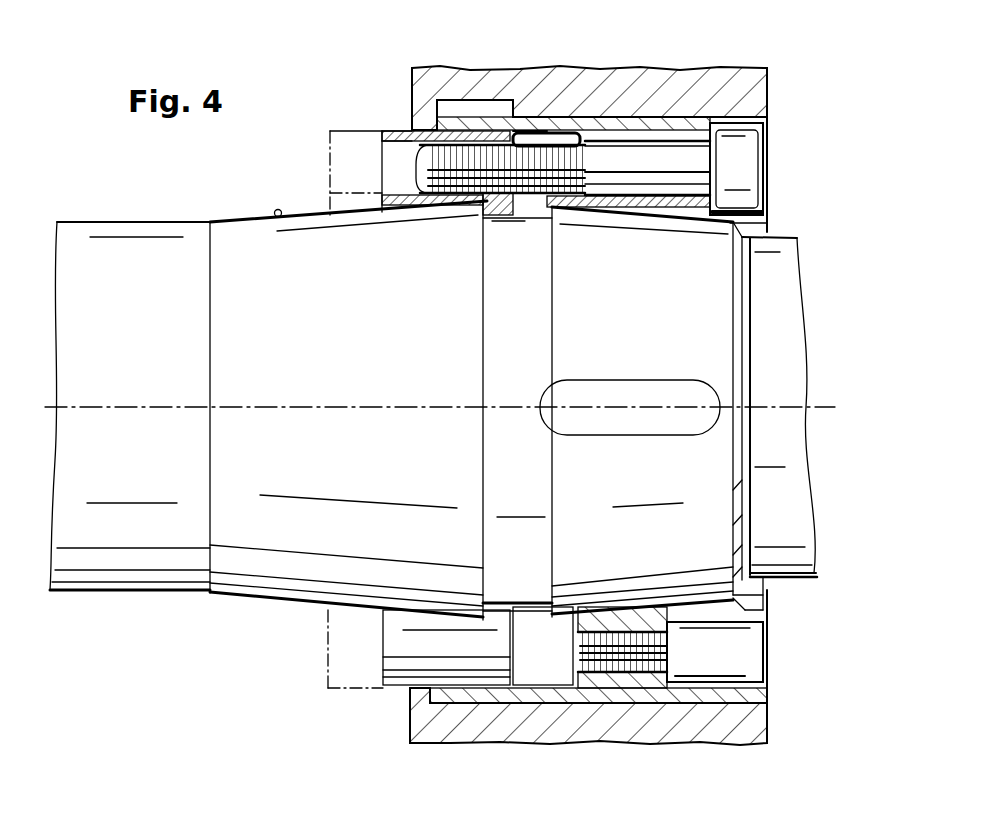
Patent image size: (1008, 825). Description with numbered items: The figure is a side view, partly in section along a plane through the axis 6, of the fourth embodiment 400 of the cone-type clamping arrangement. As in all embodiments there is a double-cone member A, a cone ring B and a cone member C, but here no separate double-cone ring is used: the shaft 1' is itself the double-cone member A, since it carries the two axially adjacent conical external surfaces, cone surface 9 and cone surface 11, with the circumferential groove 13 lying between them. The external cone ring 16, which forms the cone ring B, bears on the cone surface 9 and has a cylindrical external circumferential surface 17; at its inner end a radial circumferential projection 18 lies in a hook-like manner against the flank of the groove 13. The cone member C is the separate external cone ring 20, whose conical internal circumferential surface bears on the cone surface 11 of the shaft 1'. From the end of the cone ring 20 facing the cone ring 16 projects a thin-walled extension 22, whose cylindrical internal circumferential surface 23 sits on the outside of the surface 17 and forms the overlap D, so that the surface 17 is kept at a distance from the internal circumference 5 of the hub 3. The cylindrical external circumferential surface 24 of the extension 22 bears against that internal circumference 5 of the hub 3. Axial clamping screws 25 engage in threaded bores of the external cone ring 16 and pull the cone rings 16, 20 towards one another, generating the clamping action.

The shaft 1' is at (268, 410).
The hub 3 is at (753, 92).
The internal circumference of the hub 5 is at (657, 117).
The axis 6 is at (812, 402).
The cone surface 9 is at (280, 217).
The cone surface 11 is at (655, 213).
The circumferential groove 13 is at (530, 208).
The external cone ring 16 is at (380, 153).
The cylindrical external circumferential surface 17 is at (399, 130).
The radial circumferential projection 18 is at (501, 222).
The external cone ring 20 is at (630, 125).
The thin-walled extension 22 is at (453, 207).
The cylindrical internal circumferential surface 23 is at (560, 128).
The cylindrical external circumferential surface 24 is at (540, 133).
The clamping screw 25 is at (607, 180).
The embodiment 400 is at (781, 128).
The double-cone member A is at (245, 214).
The cone ring B is at (372, 168).
The cone member C is at (695, 98).
The overlap D is at (472, 103).